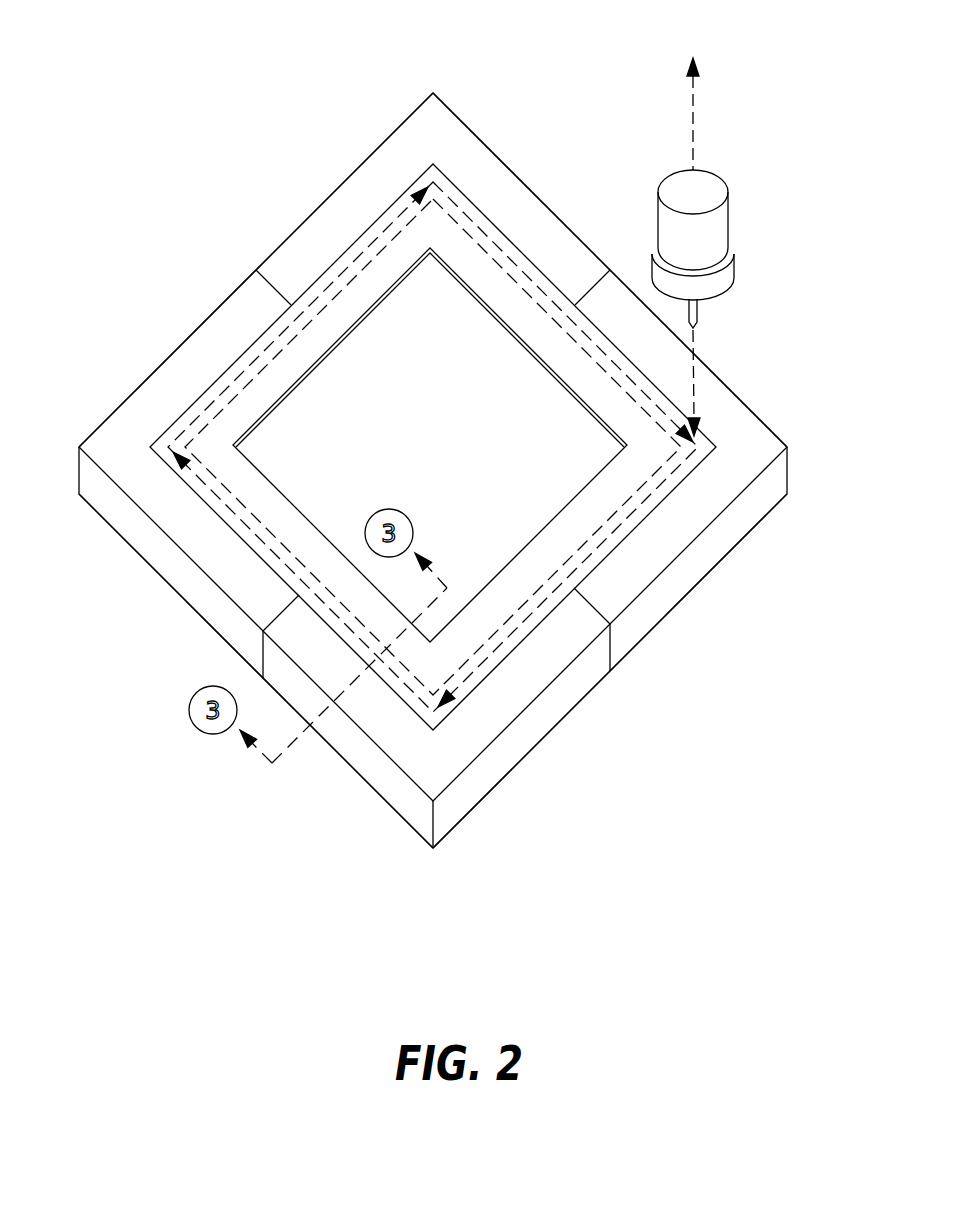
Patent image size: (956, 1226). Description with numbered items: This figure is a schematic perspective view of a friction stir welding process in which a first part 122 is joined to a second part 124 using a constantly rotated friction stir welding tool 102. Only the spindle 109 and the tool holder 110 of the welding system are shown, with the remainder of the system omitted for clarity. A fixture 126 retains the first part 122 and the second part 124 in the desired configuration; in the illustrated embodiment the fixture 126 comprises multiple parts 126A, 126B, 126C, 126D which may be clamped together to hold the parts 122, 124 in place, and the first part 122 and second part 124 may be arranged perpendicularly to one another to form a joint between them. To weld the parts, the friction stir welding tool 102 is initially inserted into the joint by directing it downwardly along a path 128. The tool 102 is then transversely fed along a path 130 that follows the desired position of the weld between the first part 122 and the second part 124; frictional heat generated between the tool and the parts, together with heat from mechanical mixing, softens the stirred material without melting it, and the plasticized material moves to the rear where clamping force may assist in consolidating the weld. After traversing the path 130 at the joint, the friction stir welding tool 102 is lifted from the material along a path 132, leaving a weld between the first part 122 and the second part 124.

The friction stir welding tool 102 is at (750, 268).
The spindle 109 is at (753, 220).
The tool holder 110 is at (744, 279).
The first part 122 is at (433, 447).
The second part 124 is at (430, 445).
The fixture 126 is at (433, 470).
The fixture part 126A is at (610, 671).
The fixture part 126B is at (226, 671).
The fixture part 126C is at (256, 270).
The fixture part 126D is at (678, 337).
The path 128 is at (780, 383).
The path 130 is at (495, 447).
The path 132 is at (746, 114).